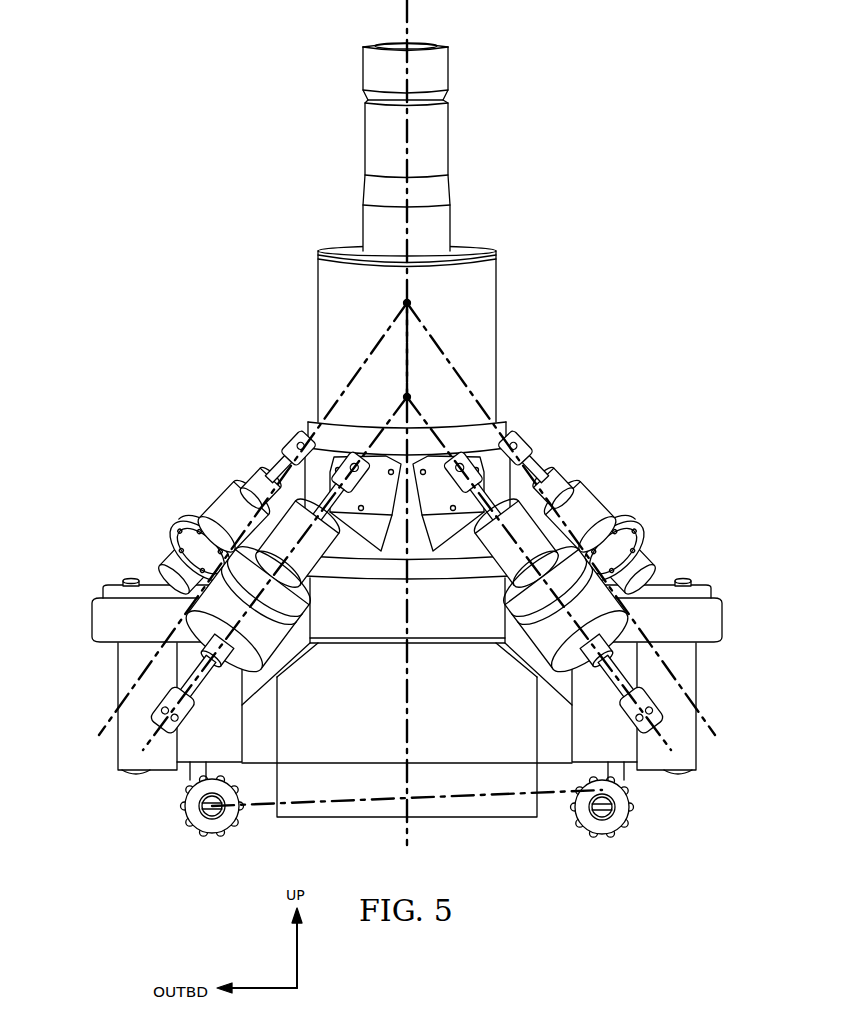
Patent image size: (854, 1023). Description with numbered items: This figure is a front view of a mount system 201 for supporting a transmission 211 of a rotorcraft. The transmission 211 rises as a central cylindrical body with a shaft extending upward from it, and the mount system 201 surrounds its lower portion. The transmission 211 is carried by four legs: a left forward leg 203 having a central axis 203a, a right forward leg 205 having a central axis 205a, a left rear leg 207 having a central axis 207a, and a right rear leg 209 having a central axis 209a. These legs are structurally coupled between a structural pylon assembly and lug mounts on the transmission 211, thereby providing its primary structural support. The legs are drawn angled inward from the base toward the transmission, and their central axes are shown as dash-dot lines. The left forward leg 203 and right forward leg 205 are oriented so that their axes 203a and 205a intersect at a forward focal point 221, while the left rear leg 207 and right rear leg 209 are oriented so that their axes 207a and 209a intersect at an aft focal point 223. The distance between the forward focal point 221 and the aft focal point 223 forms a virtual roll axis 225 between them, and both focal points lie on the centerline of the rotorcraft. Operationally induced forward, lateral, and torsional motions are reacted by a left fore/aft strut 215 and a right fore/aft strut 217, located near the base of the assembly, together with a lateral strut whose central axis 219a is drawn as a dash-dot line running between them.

The mount system 201 is at (410, 445).
The left forward leg 203 is at (514, 626).
The central axis of left forward leg 203a is at (672, 744).
The right forward leg 205 is at (300, 626).
The central axis of right forward leg 205a is at (142, 741).
The left rear leg 207 is at (601, 537).
The central axis of left rear leg 207a is at (712, 728).
The right rear leg 209 is at (213, 537).
The central axis of right rear leg 209a is at (102, 728).
The transmission 211 is at (496, 315).
The left fore/aft strut 215 is at (602, 836).
The right fore/aft strut 217 is at (212, 834).
The central axis of lateral strut 219a is at (470, 800).
The forward focal point 221 is at (403, 398).
The aft focal point 223 is at (411, 303).
The virtual roll axis 225 is at (405, 353).